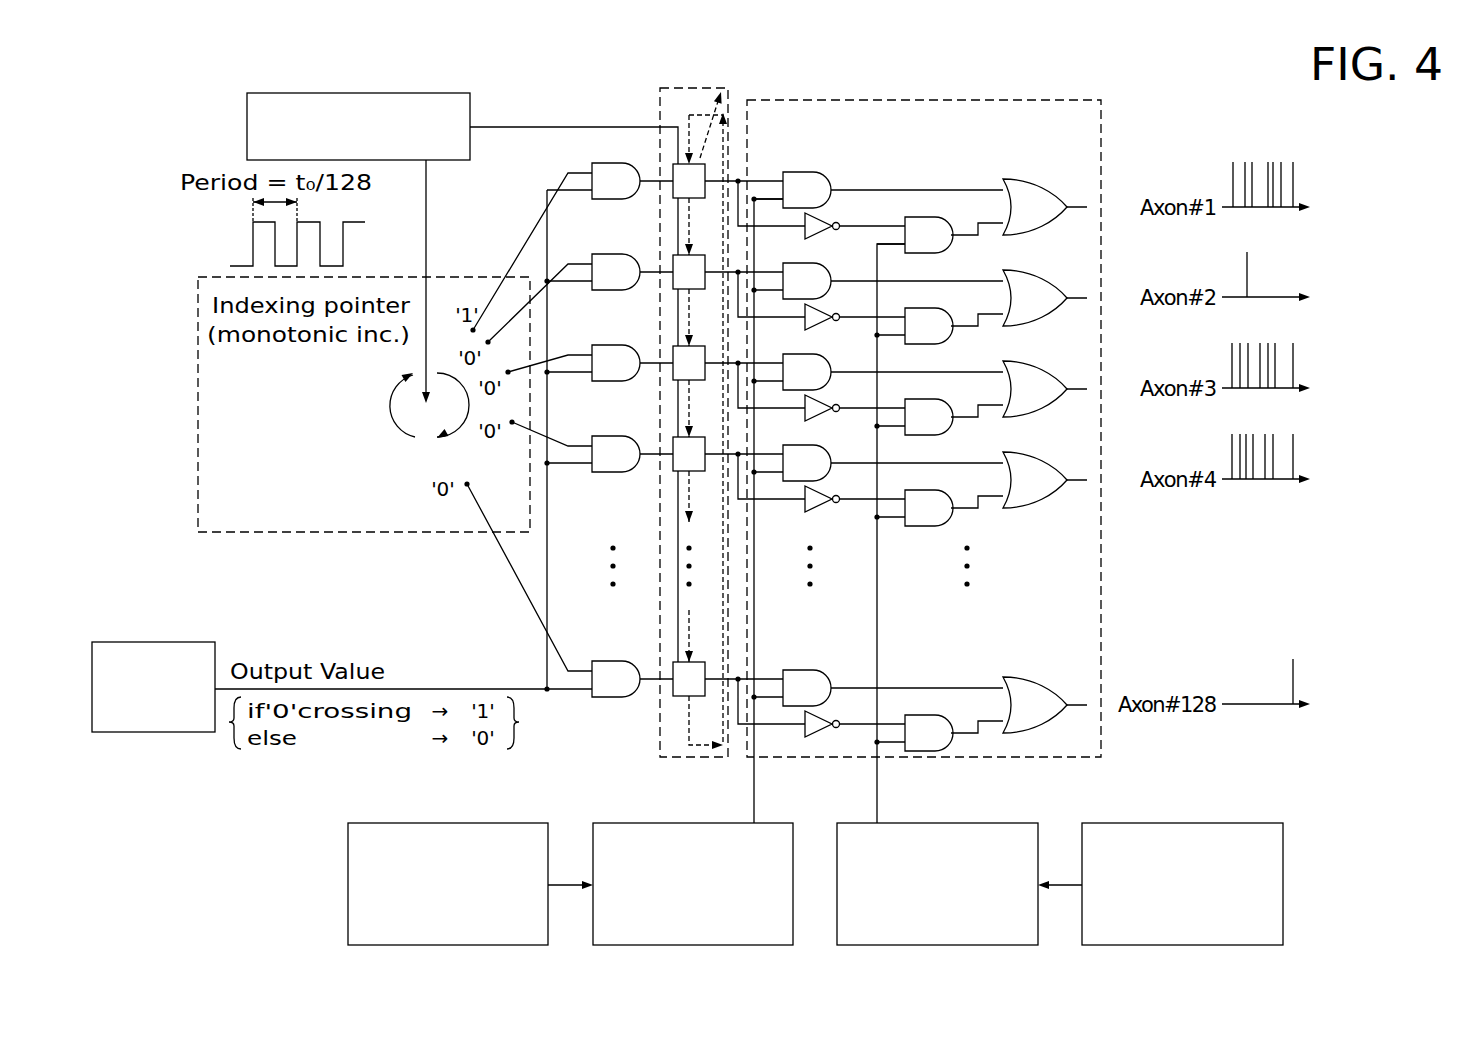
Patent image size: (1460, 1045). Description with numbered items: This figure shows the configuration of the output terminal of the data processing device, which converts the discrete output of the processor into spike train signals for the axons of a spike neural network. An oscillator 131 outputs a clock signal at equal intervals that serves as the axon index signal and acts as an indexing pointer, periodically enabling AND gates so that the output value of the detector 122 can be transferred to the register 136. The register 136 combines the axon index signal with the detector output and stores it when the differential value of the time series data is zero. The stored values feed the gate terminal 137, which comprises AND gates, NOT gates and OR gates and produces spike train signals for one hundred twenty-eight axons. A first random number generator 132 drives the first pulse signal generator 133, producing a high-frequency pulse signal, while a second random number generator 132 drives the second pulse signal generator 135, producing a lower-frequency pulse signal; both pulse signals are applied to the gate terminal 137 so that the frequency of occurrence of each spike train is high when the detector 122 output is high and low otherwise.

The detector 122 is at (167, 642).
The oscillator 131 is at (425, 93).
The first random number generator 132 is at (503, 823).
The first pulse signal generator 133 is at (700, 823).
The second pulse signal generator 135 is at (992, 823).
The register 136 is at (705, 88).
The gate terminal 137 is at (1008, 100).